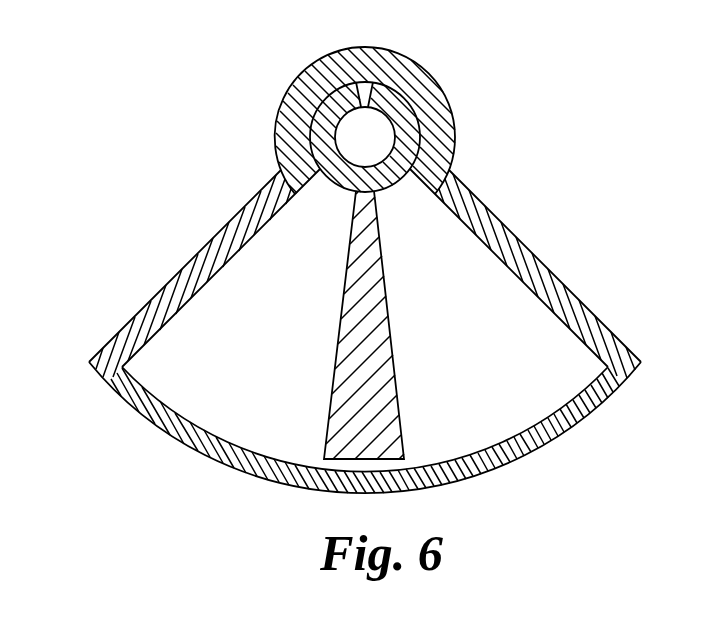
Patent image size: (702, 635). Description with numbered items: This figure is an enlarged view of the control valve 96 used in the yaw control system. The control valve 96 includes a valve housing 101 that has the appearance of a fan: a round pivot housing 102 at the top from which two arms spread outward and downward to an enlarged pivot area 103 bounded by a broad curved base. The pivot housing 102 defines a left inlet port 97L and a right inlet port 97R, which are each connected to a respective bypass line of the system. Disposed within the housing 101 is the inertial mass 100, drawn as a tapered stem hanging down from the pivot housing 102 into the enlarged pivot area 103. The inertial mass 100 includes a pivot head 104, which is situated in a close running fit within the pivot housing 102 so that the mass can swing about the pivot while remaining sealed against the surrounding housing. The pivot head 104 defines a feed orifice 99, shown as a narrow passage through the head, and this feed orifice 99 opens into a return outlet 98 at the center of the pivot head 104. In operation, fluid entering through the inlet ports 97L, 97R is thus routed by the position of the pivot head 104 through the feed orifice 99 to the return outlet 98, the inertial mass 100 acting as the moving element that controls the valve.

The control valve 96 is at (365, 254).
The left inlet port 97L is at (304, 85).
The right inlet port 97R is at (422, 90).
The return outlet 98 is at (380, 133).
The feed orifice 99 is at (363, 100).
The inertial mass 100 is at (390, 341).
The valve housing 101 is at (524, 256).
The pivot housing 102 is at (446, 171).
The enlarged pivot area 103 is at (227, 407).
The pivot head 104 is at (328, 184).